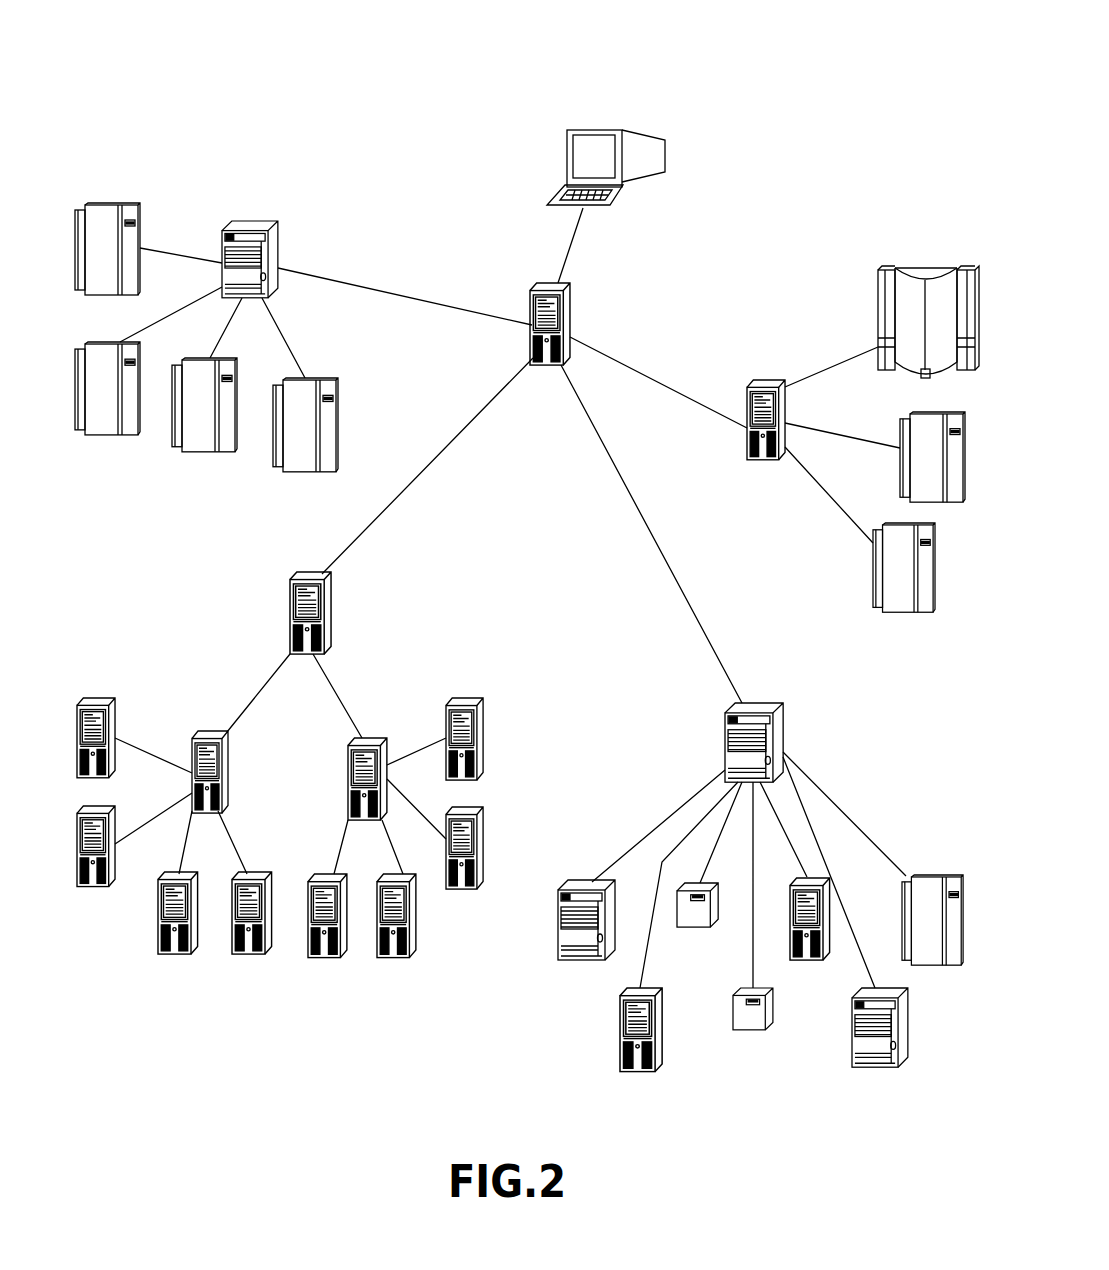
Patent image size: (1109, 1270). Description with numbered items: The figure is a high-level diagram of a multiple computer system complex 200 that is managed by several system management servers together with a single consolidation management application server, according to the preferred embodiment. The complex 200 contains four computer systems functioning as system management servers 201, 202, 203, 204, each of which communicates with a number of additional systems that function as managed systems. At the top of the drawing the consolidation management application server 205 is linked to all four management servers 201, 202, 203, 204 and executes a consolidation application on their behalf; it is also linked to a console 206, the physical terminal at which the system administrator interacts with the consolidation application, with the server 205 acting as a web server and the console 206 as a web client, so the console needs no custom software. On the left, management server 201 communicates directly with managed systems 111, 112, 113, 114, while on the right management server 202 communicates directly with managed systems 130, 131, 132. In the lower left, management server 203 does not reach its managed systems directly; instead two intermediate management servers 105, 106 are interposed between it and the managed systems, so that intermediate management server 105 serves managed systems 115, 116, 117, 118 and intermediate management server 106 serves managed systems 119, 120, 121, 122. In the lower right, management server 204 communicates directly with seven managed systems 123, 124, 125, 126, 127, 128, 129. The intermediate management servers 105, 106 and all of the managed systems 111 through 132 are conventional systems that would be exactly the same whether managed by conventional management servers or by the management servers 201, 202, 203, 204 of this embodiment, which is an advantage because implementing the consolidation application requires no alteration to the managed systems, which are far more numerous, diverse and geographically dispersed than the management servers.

The multiple computer system complex 200 is at (477, 60).
The system management server 201 is at (248, 221).
The system management server 202 is at (781, 379).
The system management server 203 is at (287, 580).
The system management server 204 is at (748, 703).
The consolidation management application server 205 is at (571, 297).
The console 206 is at (643, 133).
The intermediate management server 105 is at (221, 731).
The intermediate management server 106 is at (365, 738).
The managed system 111 is at (108, 203).
The managed system 112 is at (97, 435).
The managed system 113 is at (197, 452).
The managed system 114 is at (307, 472).
The managed system 115 is at (98, 698).
The managed system 116 is at (91, 887).
The managed system 117 is at (170, 954).
The managed system 118 is at (244, 954).
The managed system 119 is at (318, 959).
The managed system 120 is at (387, 959).
The managed system 121 is at (456, 890).
The managed system 122 is at (456, 698).
The managed system 123 is at (585, 962).
The managed system 124 is at (628, 1073).
The managed system 125 is at (697, 928).
The managed system 126 is at (737, 1032).
The managed system 127 is at (793, 960).
The managed system 128 is at (858, 1068).
The managed system 129 is at (915, 965).
The managed system 130 is at (901, 612).
The managed system 131 is at (928, 412).
The managed system 132 is at (908, 268).